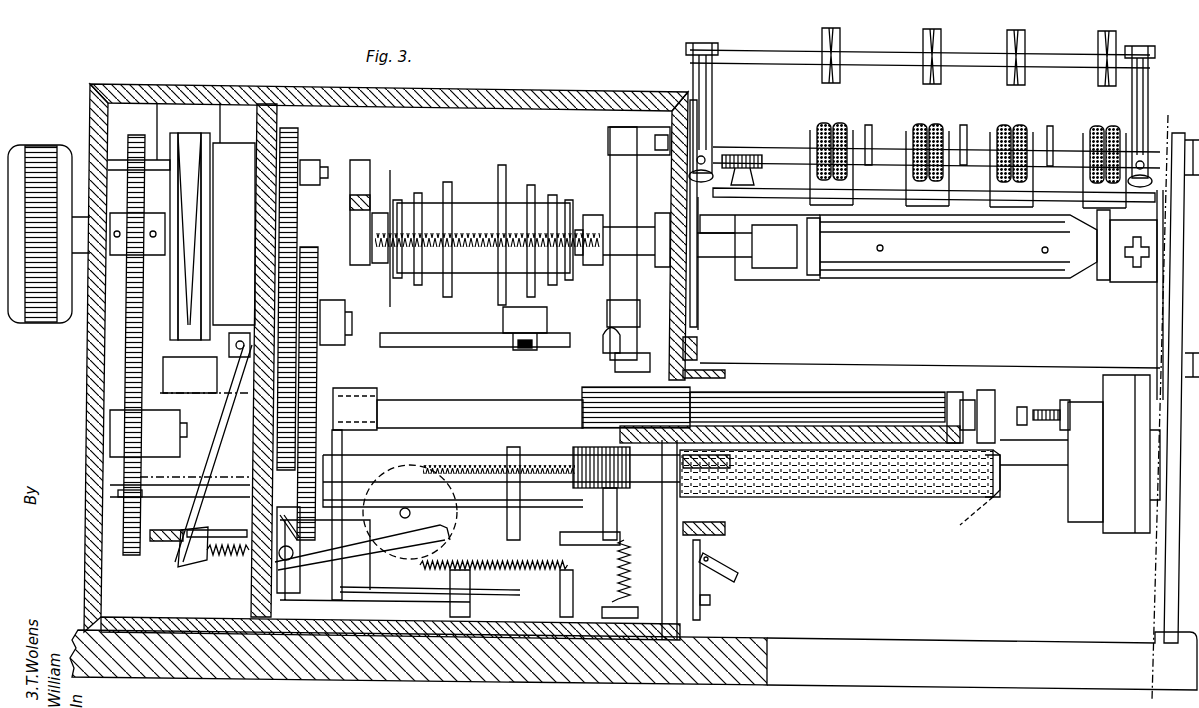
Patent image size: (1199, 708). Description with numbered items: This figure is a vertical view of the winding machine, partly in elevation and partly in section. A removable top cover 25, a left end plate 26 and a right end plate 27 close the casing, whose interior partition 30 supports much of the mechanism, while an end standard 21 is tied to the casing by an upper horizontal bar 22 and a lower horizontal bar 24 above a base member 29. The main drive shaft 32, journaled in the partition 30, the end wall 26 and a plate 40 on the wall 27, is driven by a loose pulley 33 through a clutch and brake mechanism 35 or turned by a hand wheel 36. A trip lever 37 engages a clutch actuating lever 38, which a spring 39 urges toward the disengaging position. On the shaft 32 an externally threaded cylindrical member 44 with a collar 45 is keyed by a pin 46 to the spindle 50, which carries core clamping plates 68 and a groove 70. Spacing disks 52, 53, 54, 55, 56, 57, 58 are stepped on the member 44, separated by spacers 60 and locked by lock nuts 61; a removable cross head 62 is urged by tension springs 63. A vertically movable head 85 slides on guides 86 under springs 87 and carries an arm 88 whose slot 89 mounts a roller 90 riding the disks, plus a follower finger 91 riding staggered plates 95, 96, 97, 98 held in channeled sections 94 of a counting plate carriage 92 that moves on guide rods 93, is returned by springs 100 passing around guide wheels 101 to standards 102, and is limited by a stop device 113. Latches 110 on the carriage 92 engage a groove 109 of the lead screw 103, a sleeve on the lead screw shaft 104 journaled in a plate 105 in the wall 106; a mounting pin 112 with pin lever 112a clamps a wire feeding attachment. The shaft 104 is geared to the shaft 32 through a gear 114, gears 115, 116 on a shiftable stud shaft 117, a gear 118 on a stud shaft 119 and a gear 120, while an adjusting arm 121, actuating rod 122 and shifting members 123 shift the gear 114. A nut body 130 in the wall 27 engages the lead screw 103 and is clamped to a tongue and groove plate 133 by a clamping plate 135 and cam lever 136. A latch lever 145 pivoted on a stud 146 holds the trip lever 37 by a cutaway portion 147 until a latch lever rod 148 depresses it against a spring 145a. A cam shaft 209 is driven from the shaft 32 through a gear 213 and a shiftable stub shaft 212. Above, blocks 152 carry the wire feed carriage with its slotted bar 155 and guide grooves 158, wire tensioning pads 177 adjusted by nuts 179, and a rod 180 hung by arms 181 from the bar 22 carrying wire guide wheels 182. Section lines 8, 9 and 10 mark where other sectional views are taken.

The section line 8- 8 is at (825, 338).
The section line 9- 9 is at (1020, 375).
The section line 10- 10 is at (396, 186).
The end standard 21 is at (1165, 591).
The upper horizontal bar 22 is at (785, 150).
The lower horizontal bar 24 is at (908, 375).
The removable top cover 25 is at (220, 96).
The removable end plate portion 26 is at (90, 380).
The removable end plate portion 27 is at (688, 336).
The base plate 29 is at (315, 640).
The interior partition 30 is at (254, 592).
The main drive shaft 32 is at (150, 210).
The pulley 33 is at (183, 165).
The clutch and brake mechanism 35 is at (234, 234).
The hand wheel 36 is at (40, 150).
The trip lever 37 is at (198, 543).
The clutch actuating lever 38 is at (193, 440).
The spring 39 is at (228, 563).
The plate 40 is at (698, 294).
The externally threaded cylindrical member 44 is at (556, 200).
The collar 45 is at (372, 200).
The pin 46 is at (372, 268).
The spindle 50 is at (725, 258).
The spacing disk 52 is at (533, 190).
The spacing disk 53 is at (506, 200).
The spacing disk 54 is at (540, 290).
The central spacing disk 55 is at (500, 308).
The spacing disk 56 is at (452, 185).
The spacing disk 57 is at (422, 195).
The spacing disk 58 is at (392, 300).
The spacers 60 is at (500, 212).
The lock nuts 61 is at (592, 215).
The removable cross head 62 is at (352, 211).
The tension springs 63 is at (487, 238).
The longitudinally extending plates 68 is at (948, 260).
The groove 70 is at (805, 270).
The vertically movable head 85 is at (640, 304).
The vertically disposed guides 86 is at (637, 184).
The springs 87 is at (616, 564).
The arm 88 is at (398, 348).
The slot 89 is at (465, 340).
The roller 90 is at (518, 330).
The follower finger 91 is at (635, 355).
The counting plate carriage 92 is at (962, 392).
The guide rods 93 is at (471, 412).
The channeled sections 94 is at (578, 392).
The plate 95 is at (870, 388).
The plate 96 is at (790, 390).
The plate 97 is at (742, 390).
The plate 98 is at (600, 434).
The springs 100 is at (470, 464).
The guide wheels 101 is at (460, 497).
The standards 102 is at (564, 590).
The lead screw 103 is at (596, 488).
The lead screw shaft 104 is at (395, 458).
The plate 105 is at (1155, 540).
The wall 106 is at (1150, 412).
The groove 109 is at (958, 522).
The latches 110 is at (993, 522).
The rotatable mounting pin 112 is at (980, 406).
The pin lever 112a is at (930, 385).
The adjustable stop device 113 is at (1088, 400).
The gear 114 is at (344, 390).
The gear 115 is at (312, 350).
The gear 116 is at (302, 304).
The shiftable stud shaft 117 is at (276, 315).
The gear 118 is at (300, 134).
The shiftable stud shaft 119 is at (278, 168).
The gear 120 is at (285, 241).
The adjusting arm 121 is at (510, 497).
The actuating rod 122 is at (420, 556).
The shifting members 123 is at (280, 566).
The nut body 130 is at (706, 537).
The tongue and groove plate 133 is at (702, 562).
The clamping plate 135 is at (704, 600).
The clamping cam lever 136 is at (740, 578).
The latch lever 145 is at (476, 535).
The spring 145a is at (410, 512).
The stud 146 is at (276, 512).
The cutaway portion 147 is at (203, 548).
The latch lever rod 148 is at (606, 516).
The blocks 152 is at (752, 215).
The slotted bar 155 is at (1128, 284).
The grooves 158 is at (1100, 222).
The wire tensioning pads 177 is at (918, 130).
The nuts 179 is at (732, 152).
The horizontally extending rod 180 is at (770, 52).
The arms 181 is at (710, 108).
The wire guide wheels 182 is at (842, 45).
The cam shaft 209 is at (150, 486).
The shiftable stub shaft 212 is at (152, 477).
The gear 213 is at (130, 560).